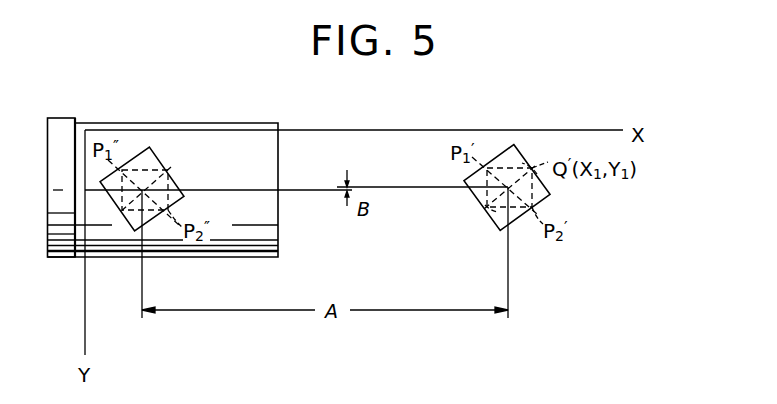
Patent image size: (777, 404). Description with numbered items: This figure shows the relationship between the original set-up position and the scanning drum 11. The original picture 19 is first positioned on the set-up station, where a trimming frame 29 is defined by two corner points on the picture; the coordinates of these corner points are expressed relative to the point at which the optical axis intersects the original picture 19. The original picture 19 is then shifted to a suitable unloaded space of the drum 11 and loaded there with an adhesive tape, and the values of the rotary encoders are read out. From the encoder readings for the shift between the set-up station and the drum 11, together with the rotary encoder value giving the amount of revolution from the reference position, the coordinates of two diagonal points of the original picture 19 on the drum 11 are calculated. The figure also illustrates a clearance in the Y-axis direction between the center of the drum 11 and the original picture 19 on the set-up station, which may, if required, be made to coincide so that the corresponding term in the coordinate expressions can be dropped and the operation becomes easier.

The drum 11 is at (180, 123).
The original picture 19 is at (162, 157).
The trimming frame 29 is at (168, 180).